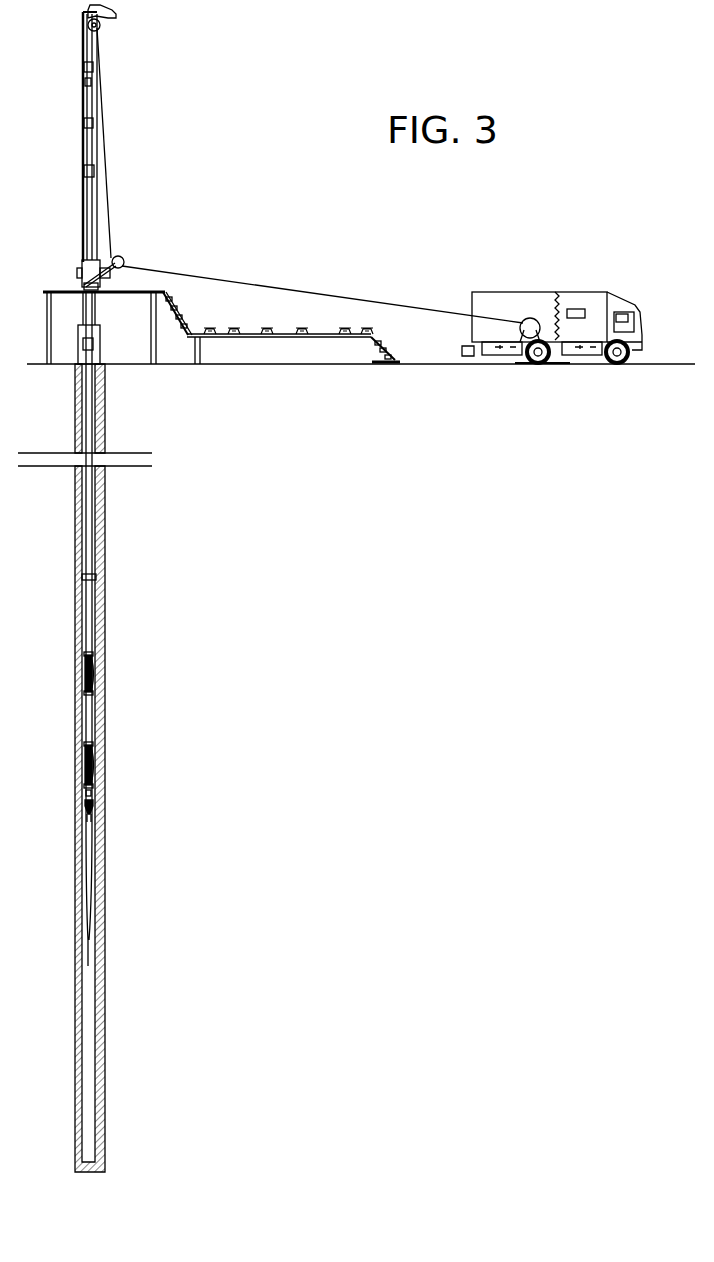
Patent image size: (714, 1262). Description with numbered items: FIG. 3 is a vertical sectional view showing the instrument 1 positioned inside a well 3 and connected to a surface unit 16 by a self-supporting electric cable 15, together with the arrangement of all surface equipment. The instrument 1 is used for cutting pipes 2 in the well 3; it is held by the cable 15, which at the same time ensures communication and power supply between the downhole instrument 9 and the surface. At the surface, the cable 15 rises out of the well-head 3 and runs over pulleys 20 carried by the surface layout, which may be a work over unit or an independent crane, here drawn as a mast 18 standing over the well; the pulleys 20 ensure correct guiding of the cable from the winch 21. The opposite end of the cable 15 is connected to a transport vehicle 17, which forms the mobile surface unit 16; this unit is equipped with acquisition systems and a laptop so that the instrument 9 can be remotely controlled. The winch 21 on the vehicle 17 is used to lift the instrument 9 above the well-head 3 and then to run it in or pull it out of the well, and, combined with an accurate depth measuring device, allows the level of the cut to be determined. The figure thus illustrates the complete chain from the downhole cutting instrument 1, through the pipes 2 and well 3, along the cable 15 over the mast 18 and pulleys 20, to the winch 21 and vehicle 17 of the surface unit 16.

The instrument 1 is at (87, 806).
The pipes 2 is at (92, 571).
The well 3 is at (106, 916).
The instrument 9 is at (84, 670).
The cable 15 is at (245, 287).
The surface unit 16 is at (443, 263).
The transport vehicle 17 is at (602, 300).
The mast 18 is at (82, 148).
The pulleys 20 is at (101, 24).
The winch 21 is at (530, 318).